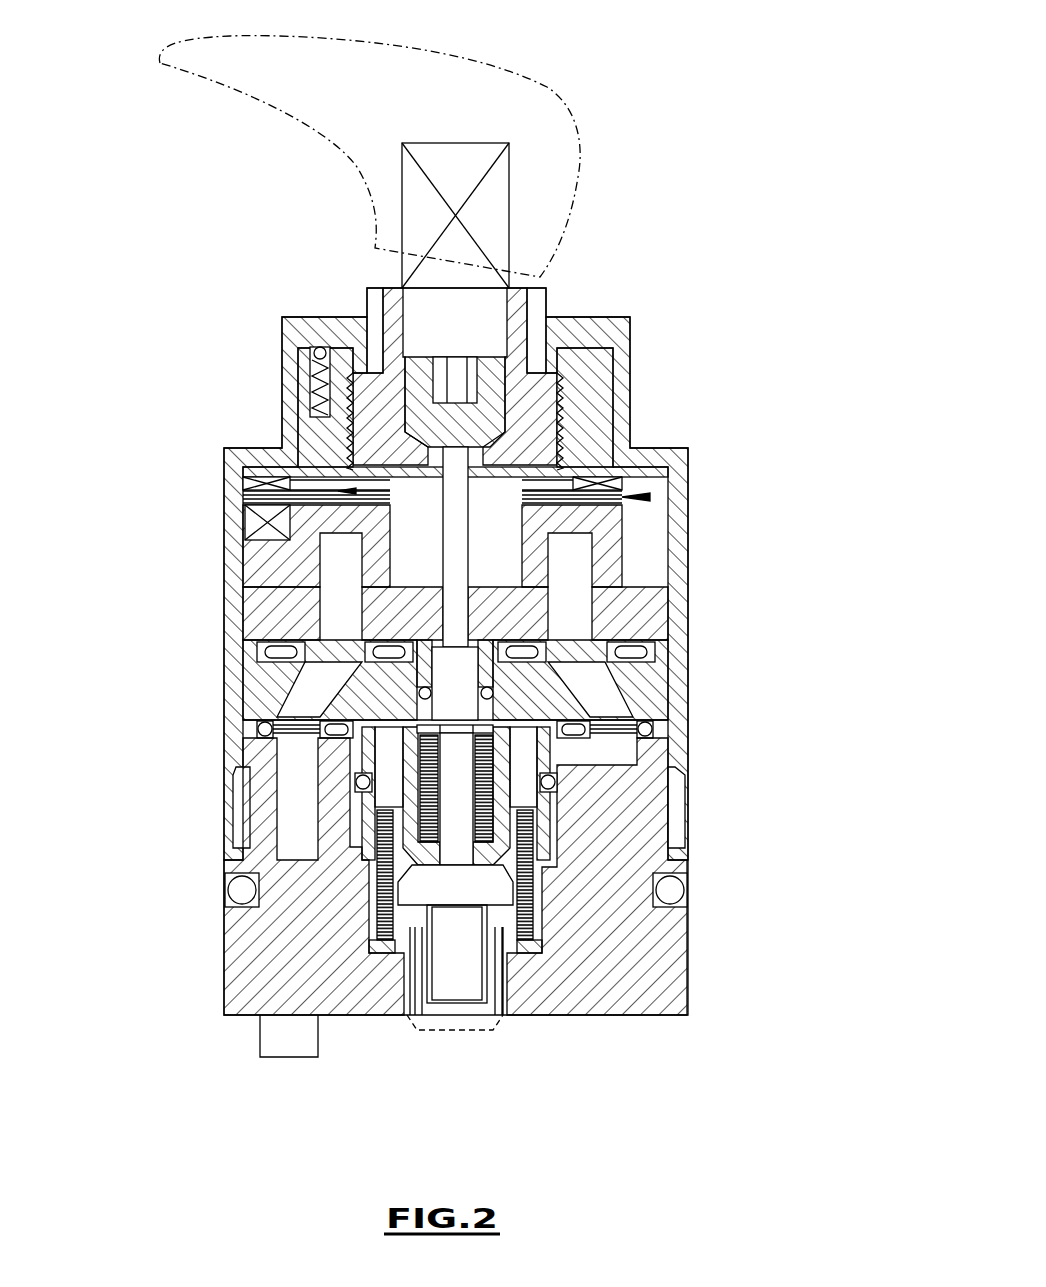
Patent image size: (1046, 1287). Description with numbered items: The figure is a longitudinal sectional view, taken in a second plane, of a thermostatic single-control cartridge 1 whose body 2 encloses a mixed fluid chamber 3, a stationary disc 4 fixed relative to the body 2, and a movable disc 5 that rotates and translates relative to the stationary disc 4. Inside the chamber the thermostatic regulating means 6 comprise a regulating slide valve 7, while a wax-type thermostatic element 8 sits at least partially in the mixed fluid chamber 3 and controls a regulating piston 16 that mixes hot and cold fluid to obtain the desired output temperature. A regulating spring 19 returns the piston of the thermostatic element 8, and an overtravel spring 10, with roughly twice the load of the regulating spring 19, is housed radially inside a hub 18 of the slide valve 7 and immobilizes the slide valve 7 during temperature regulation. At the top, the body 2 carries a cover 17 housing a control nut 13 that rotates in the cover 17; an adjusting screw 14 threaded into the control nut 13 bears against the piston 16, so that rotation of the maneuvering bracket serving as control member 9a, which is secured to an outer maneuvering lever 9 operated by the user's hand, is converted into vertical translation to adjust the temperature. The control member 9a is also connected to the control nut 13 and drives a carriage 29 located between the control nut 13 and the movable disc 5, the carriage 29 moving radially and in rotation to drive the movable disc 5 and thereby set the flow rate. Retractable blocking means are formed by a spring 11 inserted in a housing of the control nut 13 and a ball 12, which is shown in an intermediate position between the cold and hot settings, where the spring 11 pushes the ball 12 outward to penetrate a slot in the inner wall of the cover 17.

The thermostatic single-control cartridge 1 is at (696, 465).
The body 2 is at (617, 950).
The mixed fluid chamber 3 is at (503, 913).
The stationary disc 4 is at (263, 613).
The movable disc 5 is at (263, 567).
The thermostatic regulating means 6 is at (460, 707).
The regulating slide valve 7 is at (363, 800).
The thermostatic element 8 is at (483, 887).
The maneuvering lever 9 is at (542, 120).
The control member 9a is at (490, 212).
The overtravel spring 10 is at (537, 742).
The spring 11 is at (300, 403).
The ball 12 is at (313, 342).
The control nut 13 is at (595, 377).
The adjusting screw 14 is at (523, 387).
The regulating piston 16 is at (450, 558).
The cover 17 is at (332, 313).
The hub 18 is at (405, 830).
The regulating spring 19 is at (380, 918).
The carriage 29 is at (652, 497).